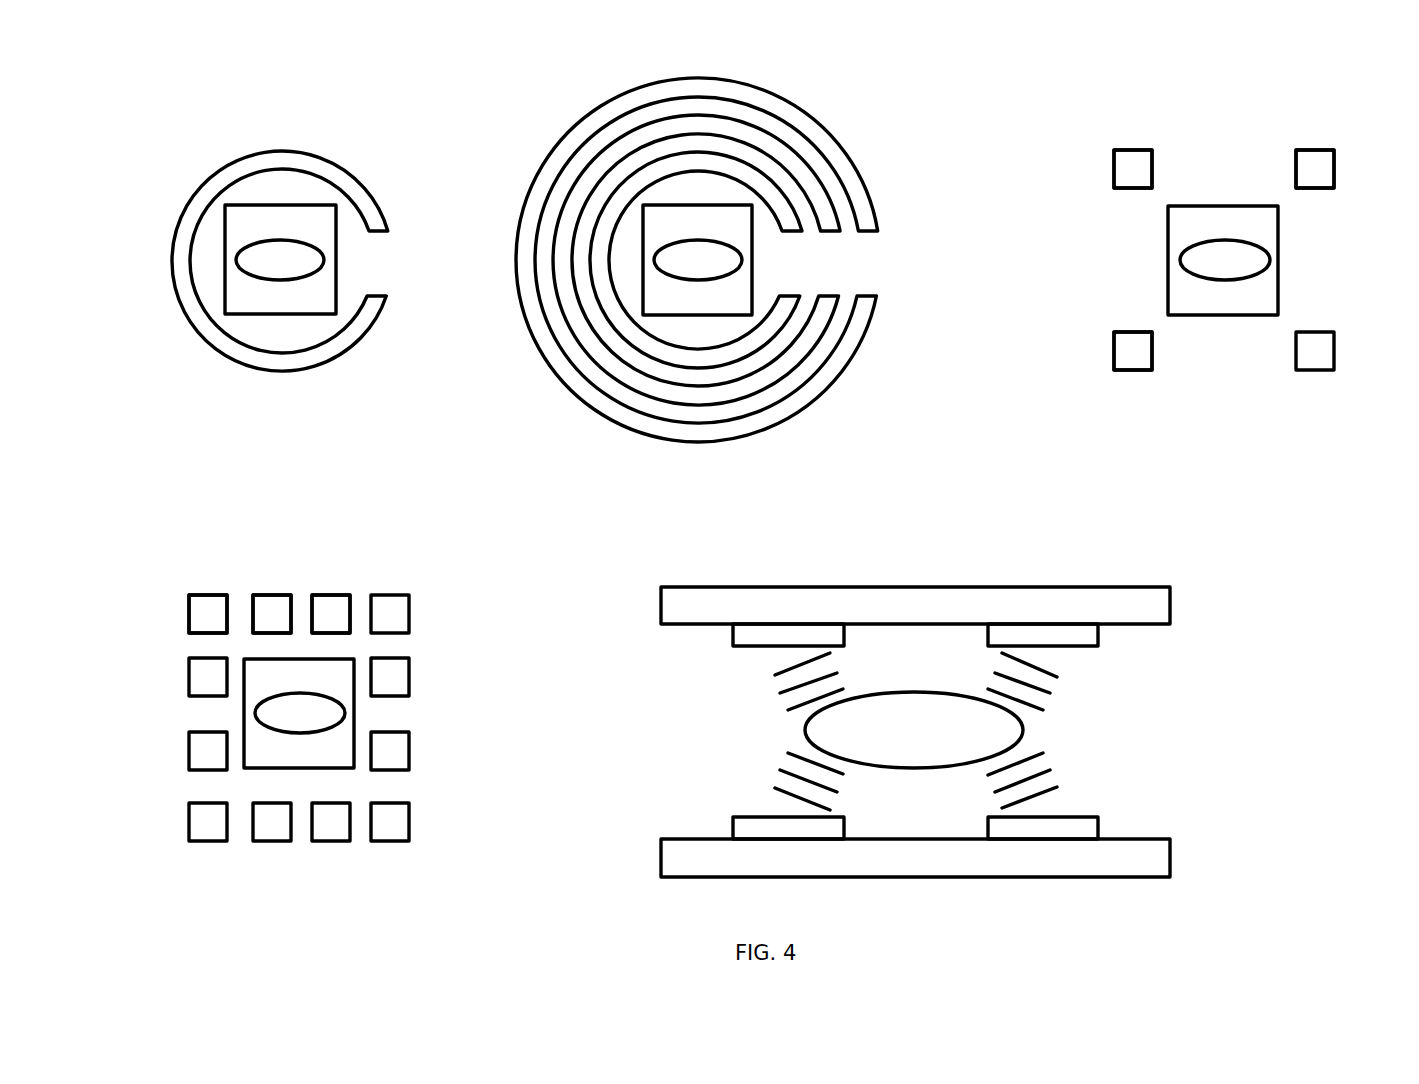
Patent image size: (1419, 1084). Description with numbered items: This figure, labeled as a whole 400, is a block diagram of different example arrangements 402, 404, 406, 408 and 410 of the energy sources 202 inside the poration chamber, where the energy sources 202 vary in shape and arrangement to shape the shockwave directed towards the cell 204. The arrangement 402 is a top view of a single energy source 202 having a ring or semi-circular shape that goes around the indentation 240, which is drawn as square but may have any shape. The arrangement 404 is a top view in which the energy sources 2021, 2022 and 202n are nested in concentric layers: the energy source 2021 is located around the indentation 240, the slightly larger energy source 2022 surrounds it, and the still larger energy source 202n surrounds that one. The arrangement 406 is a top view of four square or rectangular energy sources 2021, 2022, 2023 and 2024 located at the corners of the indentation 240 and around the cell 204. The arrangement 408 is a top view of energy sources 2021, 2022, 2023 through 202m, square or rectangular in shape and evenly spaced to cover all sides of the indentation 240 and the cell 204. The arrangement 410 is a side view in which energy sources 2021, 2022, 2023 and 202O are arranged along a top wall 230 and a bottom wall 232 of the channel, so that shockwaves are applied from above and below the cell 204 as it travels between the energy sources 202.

The electrode arrangements 400 is at (152, 69).
The arrangement 402 is at (360, 95).
The arrangement 404 is at (839, 86).
The arrangement 406 is at (1327, 102).
The arrangement 408 is at (416, 507).
The arrangement 410 is at (1209, 502).
The energy source 202 is at (369, 199).
The energy source 2021 is at (788, 232).
The energy source 2022 is at (828, 232).
The energy source 2023 is at (1130, 332).
The energy source 2024 is at (1313, 332).
The energy source 202n is at (866, 232).
The energy source 202m is at (188, 682).
The energy source 202O is at (1098, 830).
The cell 204 is at (325, 262).
The indentation 240 is at (238, 216).
The top wall 230 is at (1077, 586).
The bottom wall 232 is at (1077, 878).